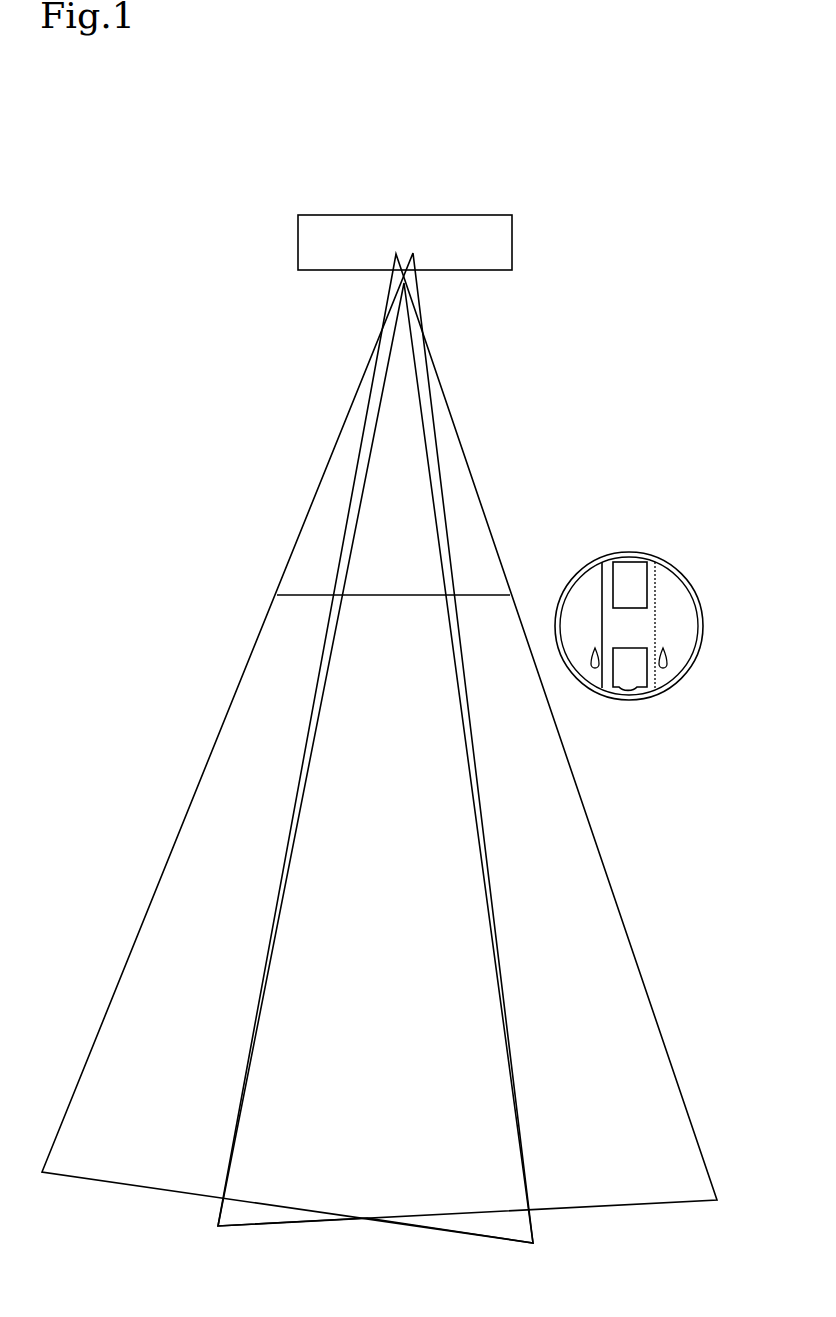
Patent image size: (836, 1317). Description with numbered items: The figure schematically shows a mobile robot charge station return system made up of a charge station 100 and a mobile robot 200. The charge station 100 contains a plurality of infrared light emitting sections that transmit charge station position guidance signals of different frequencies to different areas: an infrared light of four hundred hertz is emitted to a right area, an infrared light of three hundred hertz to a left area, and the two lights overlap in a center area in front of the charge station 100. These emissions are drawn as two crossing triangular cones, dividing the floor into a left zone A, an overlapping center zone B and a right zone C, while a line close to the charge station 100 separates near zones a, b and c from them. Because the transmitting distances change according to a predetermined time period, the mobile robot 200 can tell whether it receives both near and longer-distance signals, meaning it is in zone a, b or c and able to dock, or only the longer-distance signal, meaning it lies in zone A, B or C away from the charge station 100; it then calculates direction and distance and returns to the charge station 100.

The charge station 100 is at (437, 196).
The mobile robot 200 is at (659, 532).
The zone A is at (287, 748).
The zone B is at (375, 763).
The zone C is at (467, 740).
The zone a is at (305, 582).
The zone b is at (395, 582).
The zone c is at (483, 582).